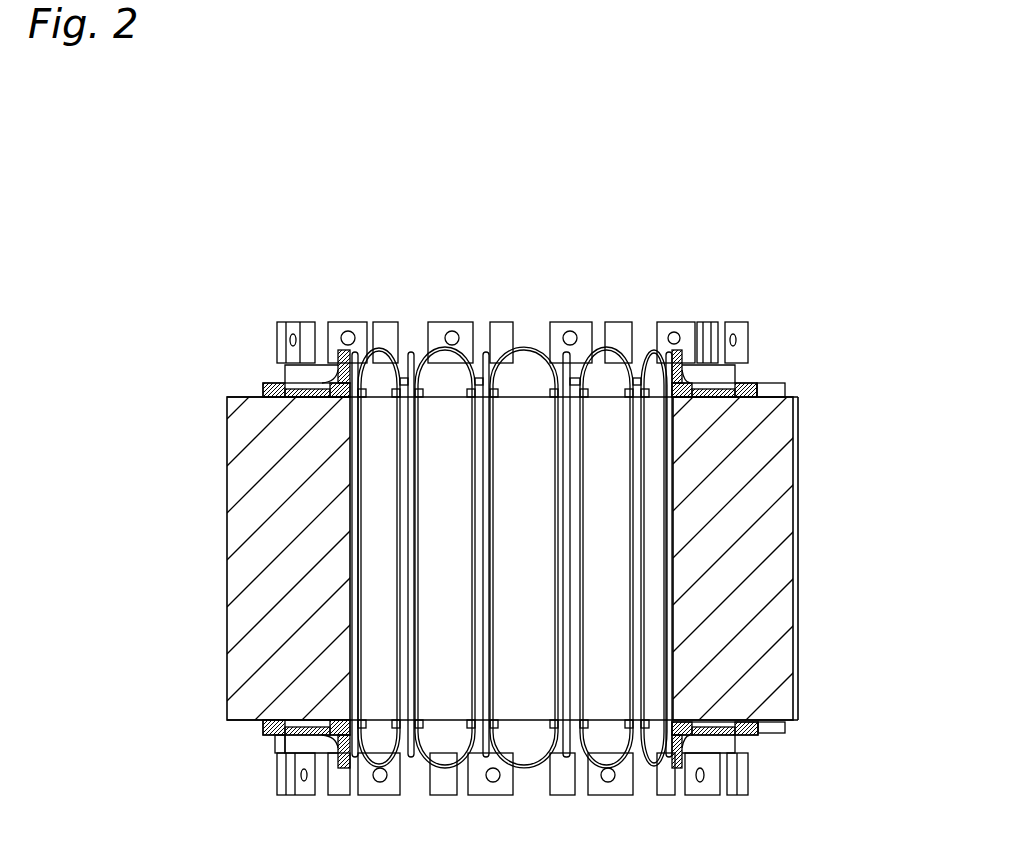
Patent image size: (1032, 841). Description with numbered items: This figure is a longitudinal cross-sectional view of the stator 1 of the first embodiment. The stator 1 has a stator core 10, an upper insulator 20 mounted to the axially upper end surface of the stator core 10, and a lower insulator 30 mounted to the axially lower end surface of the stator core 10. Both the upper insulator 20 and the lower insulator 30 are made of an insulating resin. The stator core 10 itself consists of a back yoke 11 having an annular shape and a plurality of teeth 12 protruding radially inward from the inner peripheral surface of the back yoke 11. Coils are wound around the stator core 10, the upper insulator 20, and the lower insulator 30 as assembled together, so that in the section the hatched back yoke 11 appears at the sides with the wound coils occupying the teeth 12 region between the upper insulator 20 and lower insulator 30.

The stator 1 is at (723, 292).
The stator core 10 is at (801, 484).
The back yoke 11 is at (780, 595).
The teeth 12 is at (522, 435).
The upper insulator 20 is at (772, 382).
The lower insulator 30 is at (765, 735).